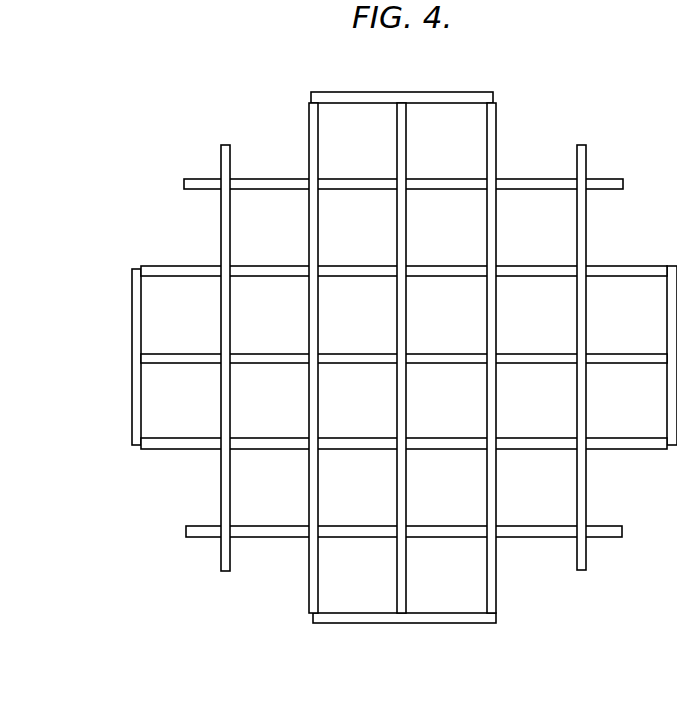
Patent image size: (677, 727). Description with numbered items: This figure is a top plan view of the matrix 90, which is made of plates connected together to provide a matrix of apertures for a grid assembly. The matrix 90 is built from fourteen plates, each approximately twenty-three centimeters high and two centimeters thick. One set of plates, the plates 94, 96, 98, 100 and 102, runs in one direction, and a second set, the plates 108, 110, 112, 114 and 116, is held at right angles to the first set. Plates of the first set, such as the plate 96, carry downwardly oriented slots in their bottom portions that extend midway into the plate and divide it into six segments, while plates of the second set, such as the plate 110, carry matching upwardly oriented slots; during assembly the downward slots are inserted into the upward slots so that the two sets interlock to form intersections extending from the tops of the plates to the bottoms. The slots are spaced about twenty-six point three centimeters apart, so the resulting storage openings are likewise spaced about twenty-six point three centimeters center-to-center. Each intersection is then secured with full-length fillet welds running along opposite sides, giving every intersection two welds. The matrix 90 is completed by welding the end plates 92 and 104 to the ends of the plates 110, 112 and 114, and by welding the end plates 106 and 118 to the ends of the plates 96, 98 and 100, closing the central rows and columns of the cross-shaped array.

The matrix 90 is at (245, 100).
The plate 92 is at (447, 93).
The plate 94 is at (453, 178).
The plate 96 is at (452, 265).
The plate 98 is at (445, 353).
The plate 100 is at (453, 440).
The plate 102 is at (447, 525).
The plate 104 is at (456, 613).
The plate 106 is at (132, 313).
The plate 108 is at (220, 320).
The plate 110 is at (308, 320).
The plate 112 is at (397, 322).
The plate 114 is at (498, 328).
The plate 116 is at (585, 332).
The plate 118 is at (665, 293).